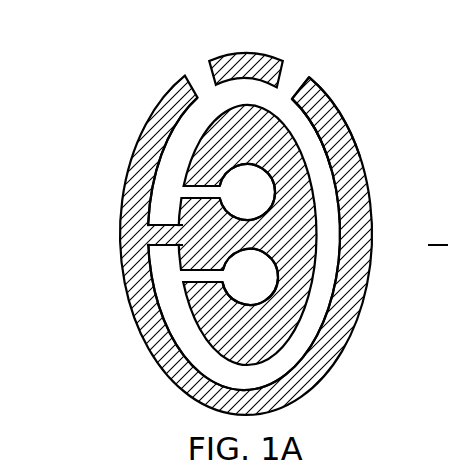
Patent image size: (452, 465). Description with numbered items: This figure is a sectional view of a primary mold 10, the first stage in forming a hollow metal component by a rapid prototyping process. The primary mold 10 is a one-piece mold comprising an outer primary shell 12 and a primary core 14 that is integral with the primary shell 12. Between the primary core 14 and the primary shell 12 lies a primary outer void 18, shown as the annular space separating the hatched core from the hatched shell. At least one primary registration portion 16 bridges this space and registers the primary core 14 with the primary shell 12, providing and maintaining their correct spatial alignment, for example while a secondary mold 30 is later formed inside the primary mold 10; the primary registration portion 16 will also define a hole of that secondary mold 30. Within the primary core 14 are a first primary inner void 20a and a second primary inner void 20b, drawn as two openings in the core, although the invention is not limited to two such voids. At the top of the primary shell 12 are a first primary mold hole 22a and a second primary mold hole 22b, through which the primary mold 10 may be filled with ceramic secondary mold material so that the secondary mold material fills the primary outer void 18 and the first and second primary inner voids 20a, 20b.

The primary mold 10 is at (130, 97).
The primary shell 12 is at (155, 120).
The primary core 14 is at (303, 158).
The primary registration portion 16 is at (160, 220).
The primary outer void 18 is at (170, 320).
The first primary inner void 20a is at (263, 200).
The second primary inner void 20b is at (230, 307).
The first primary mold hole 22a is at (191, 64).
The second primary mold hole 22b is at (300, 61).
The secondary mold 30 is at (392, 453).